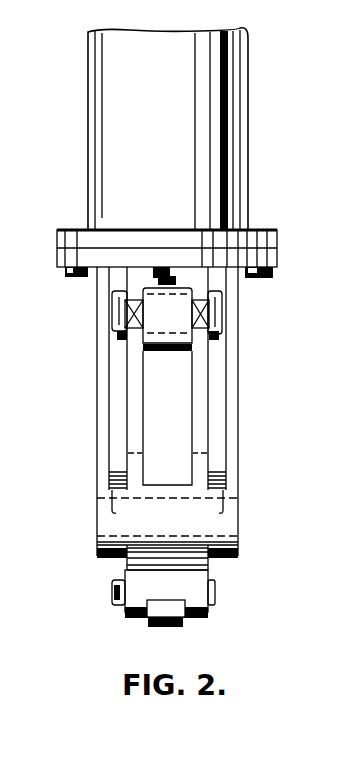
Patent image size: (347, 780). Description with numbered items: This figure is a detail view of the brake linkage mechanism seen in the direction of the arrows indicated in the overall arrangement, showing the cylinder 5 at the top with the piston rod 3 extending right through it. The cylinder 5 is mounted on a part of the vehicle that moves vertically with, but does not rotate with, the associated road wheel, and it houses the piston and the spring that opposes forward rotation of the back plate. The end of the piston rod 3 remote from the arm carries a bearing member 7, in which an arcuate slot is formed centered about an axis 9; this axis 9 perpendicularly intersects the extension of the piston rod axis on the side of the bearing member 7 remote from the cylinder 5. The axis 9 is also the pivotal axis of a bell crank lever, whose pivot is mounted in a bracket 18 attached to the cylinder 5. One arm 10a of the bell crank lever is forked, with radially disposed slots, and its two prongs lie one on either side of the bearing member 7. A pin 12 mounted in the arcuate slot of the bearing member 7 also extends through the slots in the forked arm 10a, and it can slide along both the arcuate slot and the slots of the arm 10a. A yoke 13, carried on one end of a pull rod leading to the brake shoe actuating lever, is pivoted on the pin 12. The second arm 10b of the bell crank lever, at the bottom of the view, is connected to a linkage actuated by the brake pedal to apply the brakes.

The cylinder 5 is at (120, 118).
The piston rod 3 is at (155, 283).
The bearing member 7 is at (150, 337).
The yoke 13 is at (120, 316).
The pin 12 is at (222, 312).
The bracket 18 is at (97, 411).
The forked arm of the bell crank lever 10a is at (202, 405).
The axis 9 is at (230, 527).
The second arm of the bell crank lever 10b is at (188, 575).